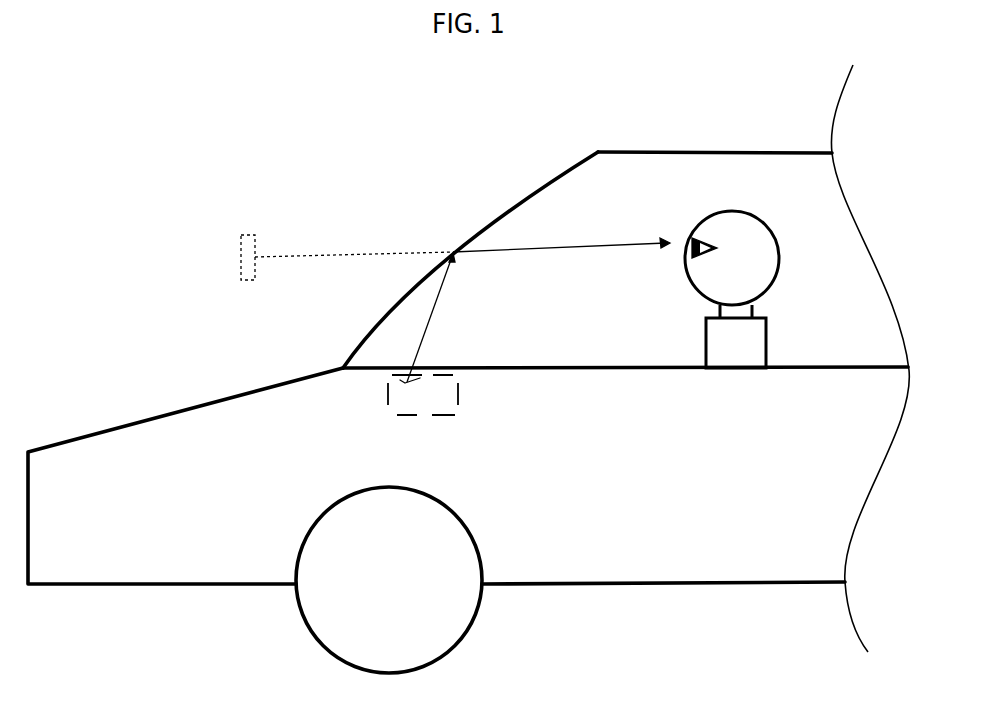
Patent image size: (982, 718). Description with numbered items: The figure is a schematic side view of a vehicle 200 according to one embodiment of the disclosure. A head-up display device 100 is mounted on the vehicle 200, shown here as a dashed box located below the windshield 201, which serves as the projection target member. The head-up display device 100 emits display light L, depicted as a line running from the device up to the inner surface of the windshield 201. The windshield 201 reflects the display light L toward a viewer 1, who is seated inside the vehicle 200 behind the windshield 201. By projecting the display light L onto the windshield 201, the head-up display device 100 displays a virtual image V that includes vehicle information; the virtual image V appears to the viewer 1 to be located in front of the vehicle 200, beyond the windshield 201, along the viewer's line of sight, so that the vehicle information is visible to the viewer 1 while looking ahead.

The vehicle 200 is at (671, 106).
The windshield 201 is at (537, 185).
The viewer 1 is at (658, 217).
The virtual image V is at (245, 233).
The display light L is at (436, 314).
The head-up display device 100 is at (458, 414).